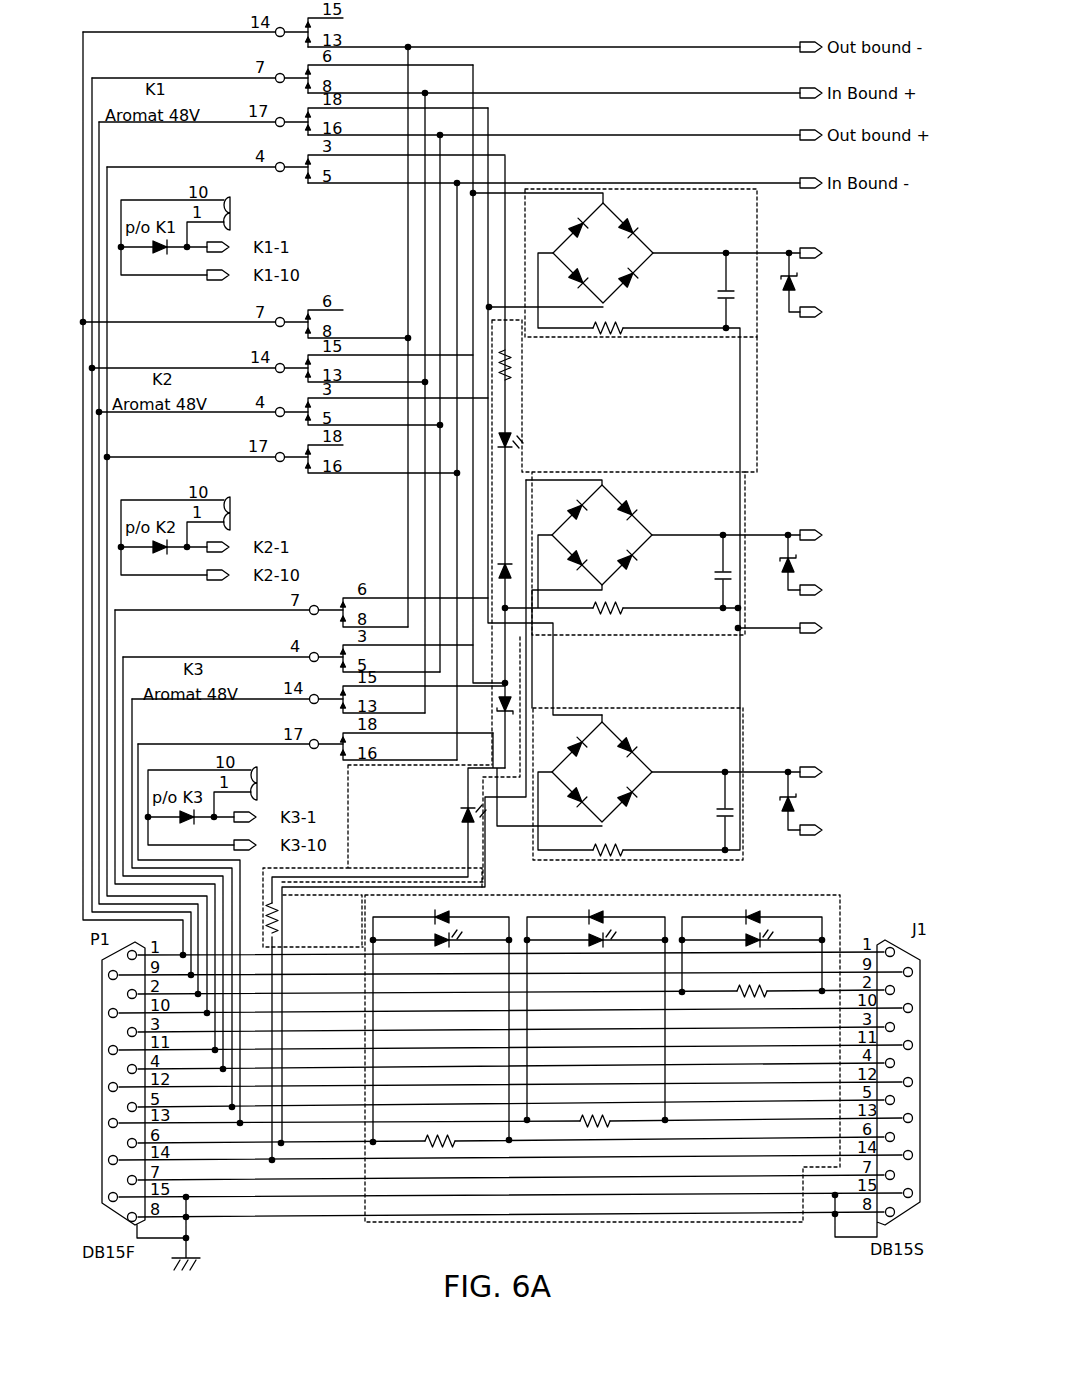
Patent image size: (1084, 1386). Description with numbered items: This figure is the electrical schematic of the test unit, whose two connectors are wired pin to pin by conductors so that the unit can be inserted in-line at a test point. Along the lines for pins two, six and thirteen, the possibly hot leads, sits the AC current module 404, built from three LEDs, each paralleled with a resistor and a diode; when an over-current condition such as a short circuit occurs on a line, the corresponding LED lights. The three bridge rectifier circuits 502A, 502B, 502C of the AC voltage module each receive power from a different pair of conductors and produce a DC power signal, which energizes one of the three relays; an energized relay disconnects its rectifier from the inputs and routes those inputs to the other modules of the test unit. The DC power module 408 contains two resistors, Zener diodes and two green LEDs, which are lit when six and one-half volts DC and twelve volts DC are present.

The AC current module 404 is at (713, 1222).
The DC power module 408 is at (348, 781).
The bridge rectifier circuit 502A is at (757, 338).
The bridge rectifier circuit 502B is at (745, 472).
The bridge rectifier circuit 502C is at (743, 862).